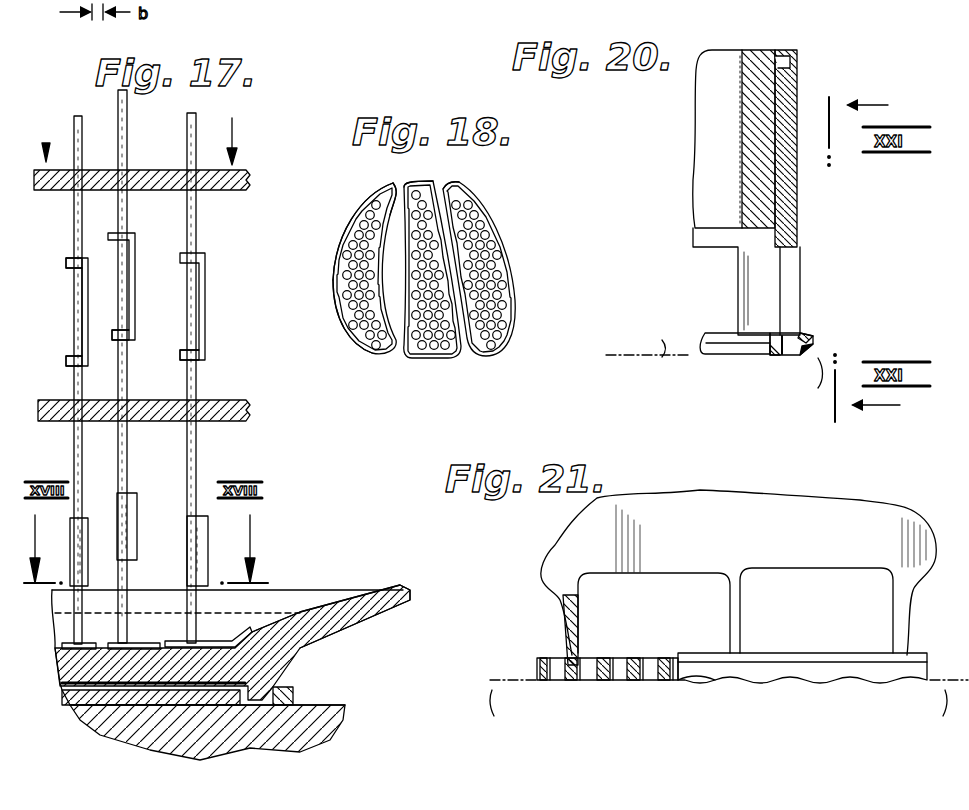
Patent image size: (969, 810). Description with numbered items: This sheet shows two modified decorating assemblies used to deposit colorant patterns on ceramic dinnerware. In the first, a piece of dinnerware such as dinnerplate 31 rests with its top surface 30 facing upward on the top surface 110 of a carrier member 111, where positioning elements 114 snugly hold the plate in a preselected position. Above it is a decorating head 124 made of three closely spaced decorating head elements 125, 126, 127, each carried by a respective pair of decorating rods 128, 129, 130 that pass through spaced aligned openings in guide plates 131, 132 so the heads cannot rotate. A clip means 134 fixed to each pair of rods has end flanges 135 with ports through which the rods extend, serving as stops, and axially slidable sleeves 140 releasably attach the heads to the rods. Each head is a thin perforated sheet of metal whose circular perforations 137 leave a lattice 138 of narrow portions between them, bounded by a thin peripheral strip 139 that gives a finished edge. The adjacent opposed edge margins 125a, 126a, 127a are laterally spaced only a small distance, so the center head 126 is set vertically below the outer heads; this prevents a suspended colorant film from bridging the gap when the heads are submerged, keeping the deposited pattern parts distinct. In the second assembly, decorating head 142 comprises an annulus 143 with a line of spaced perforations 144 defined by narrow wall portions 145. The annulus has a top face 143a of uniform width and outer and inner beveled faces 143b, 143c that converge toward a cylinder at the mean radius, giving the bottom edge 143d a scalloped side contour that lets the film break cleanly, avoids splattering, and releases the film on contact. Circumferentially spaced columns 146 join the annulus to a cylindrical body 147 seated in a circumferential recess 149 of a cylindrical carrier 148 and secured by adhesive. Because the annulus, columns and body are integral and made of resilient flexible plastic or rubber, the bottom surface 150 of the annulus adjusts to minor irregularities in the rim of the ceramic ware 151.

In FIG. 17, the top surface 30 is at (161, 660).
In FIG. 17, the dinnerplate 31 is at (405, 586).
In FIG. 17, the top surface 110 is at (330, 705).
In FIG. 17, the carrier member 111 is at (318, 730).
In FIG. 17, the positioning elements 114 is at (295, 695).
In FIG. 17, the decorating head 124 is at (268, 552).
In FIG. 18, the decorating head 124 is at (440, 282).
In FIG. 17, the decorating head element 125 is at (240, 630).
In FIG. 18, the decorating head element 125 is at (500, 355).
In FIG. 17, the decorating head element 126 is at (145, 643).
In FIG. 18, the decorating head element 126 is at (453, 366).
In FIG. 17, the decorating head element 127 is at (79, 650).
In FIG. 18, the decorating head element 127 is at (430, 282).
In FIG. 18, the edge margin 125a is at (447, 232).
In FIG. 18, the edge margin 126a is at (446, 214).
In FIG. 18, the edge margin 127a is at (398, 198).
In FIG. 17, the decorating rods 128 is at (197, 130).
In FIG. 17, the decorating rods 129 is at (128, 138).
In FIG. 17, the decorating rods 130 is at (74, 125).
In FIG. 17, the guide plate 131 is at (236, 421).
In FIG. 17, the guide plate 132 is at (220, 186).
In FIG. 17, the clip means 134 is at (88, 283).
In FIG. 17, the end flanges 135 is at (113, 335).
In FIG. 18, the perforations 137 is at (368, 206).
In FIG. 18, the lattice 138 is at (341, 257).
In FIG. 18, the peripheral strip 139 is at (335, 305).
In FIG. 17, the sleeves 140 is at (88, 537).
In FIG. 20, the decorating head 142 is at (776, 227).
In FIG. 21, the decorating head 142 is at (738, 572).
In FIG. 20, the annulus 143 is at (787, 349).
In FIG. 21, the annulus 143 is at (732, 669).
In FIG. 20, the top face 143a is at (803, 334).
In FIG. 20, the outer beveled face 143b is at (813, 350).
In FIG. 21, the outer beveled face 143b is at (851, 673).
In FIG. 20, the inner beveled face 143c is at (770, 352).
In FIG. 20, the bottom edge 143d is at (782, 358).
In FIG. 21, the perforations 144 is at (650, 674).
In FIG. 20, the wall portions 145 is at (733, 338).
In FIG. 20, the columns 146 is at (790, 282).
In FIG. 21, the columns 146 is at (892, 608).
In FIG. 20, the cylindrical body 147 is at (790, 108).
In FIG. 20, the cylindrical carrier 148 is at (753, 62).
In FIG. 20, the circumferential recess 149 is at (782, 70).
In FIG. 20, the bottom surface 150 is at (806, 358).
In FIG. 21, the bottom surface 150 is at (725, 672).
In FIG. 20, the ceramic ware 151 is at (655, 334).
In FIG. 21, the ceramic ware 151 is at (507, 678).